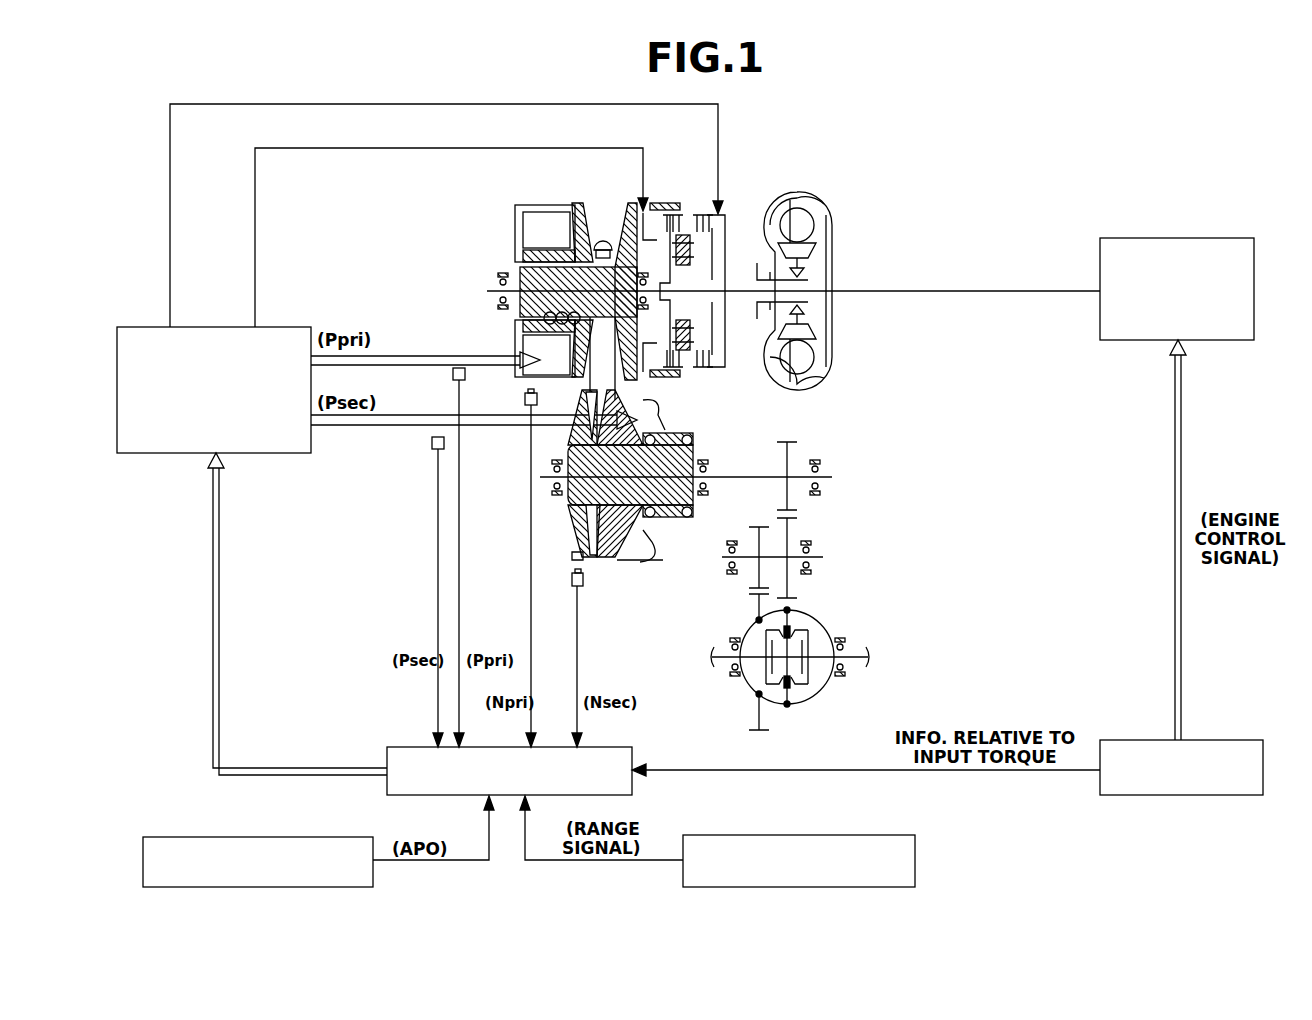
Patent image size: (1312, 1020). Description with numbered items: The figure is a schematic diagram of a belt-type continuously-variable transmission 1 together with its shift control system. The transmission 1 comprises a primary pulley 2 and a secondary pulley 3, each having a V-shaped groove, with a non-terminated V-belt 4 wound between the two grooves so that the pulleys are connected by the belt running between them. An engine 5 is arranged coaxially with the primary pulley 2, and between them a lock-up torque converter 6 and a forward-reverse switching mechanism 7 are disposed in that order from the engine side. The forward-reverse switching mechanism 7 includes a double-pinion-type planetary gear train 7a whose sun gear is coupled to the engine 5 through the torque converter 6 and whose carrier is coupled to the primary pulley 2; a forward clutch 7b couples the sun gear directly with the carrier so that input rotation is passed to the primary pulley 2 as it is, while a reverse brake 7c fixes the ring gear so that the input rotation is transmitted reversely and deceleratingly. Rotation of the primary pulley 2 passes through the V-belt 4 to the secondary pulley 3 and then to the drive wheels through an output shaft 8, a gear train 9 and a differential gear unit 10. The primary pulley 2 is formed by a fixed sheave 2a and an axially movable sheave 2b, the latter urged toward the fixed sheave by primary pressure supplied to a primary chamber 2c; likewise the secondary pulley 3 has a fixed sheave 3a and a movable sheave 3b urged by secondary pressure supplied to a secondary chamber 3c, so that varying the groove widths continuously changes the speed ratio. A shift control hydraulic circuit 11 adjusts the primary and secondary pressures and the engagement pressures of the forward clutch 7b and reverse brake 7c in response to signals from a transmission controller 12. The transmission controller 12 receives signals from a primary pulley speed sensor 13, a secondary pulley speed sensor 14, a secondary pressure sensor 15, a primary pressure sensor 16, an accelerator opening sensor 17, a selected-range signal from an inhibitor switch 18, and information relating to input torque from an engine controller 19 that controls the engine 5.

The belt-type continuously-variable transmission 1 is at (540, 192).
The primary pulley 2 is at (608, 205).
The fixed sheave 2a is at (630, 203).
The movable sheave 2b is at (580, 203).
The primary chamber 2c is at (522, 228).
The secondary pulley 3 is at (668, 568).
The fixed sheave 3a is at (580, 533).
The movable sheave 3b is at (616, 562).
The secondary chamber 3c is at (633, 548).
The V-belt 4 is at (602, 242).
The engine 5 is at (1172, 238).
The lock-up torque converter 6 is at (806, 180).
The forward-reverse switching mechanism 7 is at (652, 200).
The double-pinion-type planetary gear train 7a is at (684, 235).
The forward clutch 7b is at (706, 212).
The reverse brake 7c is at (661, 205).
The output shaft 8 is at (735, 477).
The gear train 9 is at (800, 530).
The differential gear unit 10 is at (838, 618).
The shift control hydraulic circuit 11 is at (288, 327).
The transmission controller 12 is at (387, 752).
The primary pulley speed sensor 13 is at (525, 398).
The secondary pulley speed sensor 14 is at (583, 578).
The secondary pressure sensor 15 is at (432, 443).
The primary pressure sensor 16 is at (453, 374).
The accelerator opening sensor 17 is at (252, 837).
The inhibitor switch 18 is at (858, 835).
The engine controller 19 is at (1230, 740).